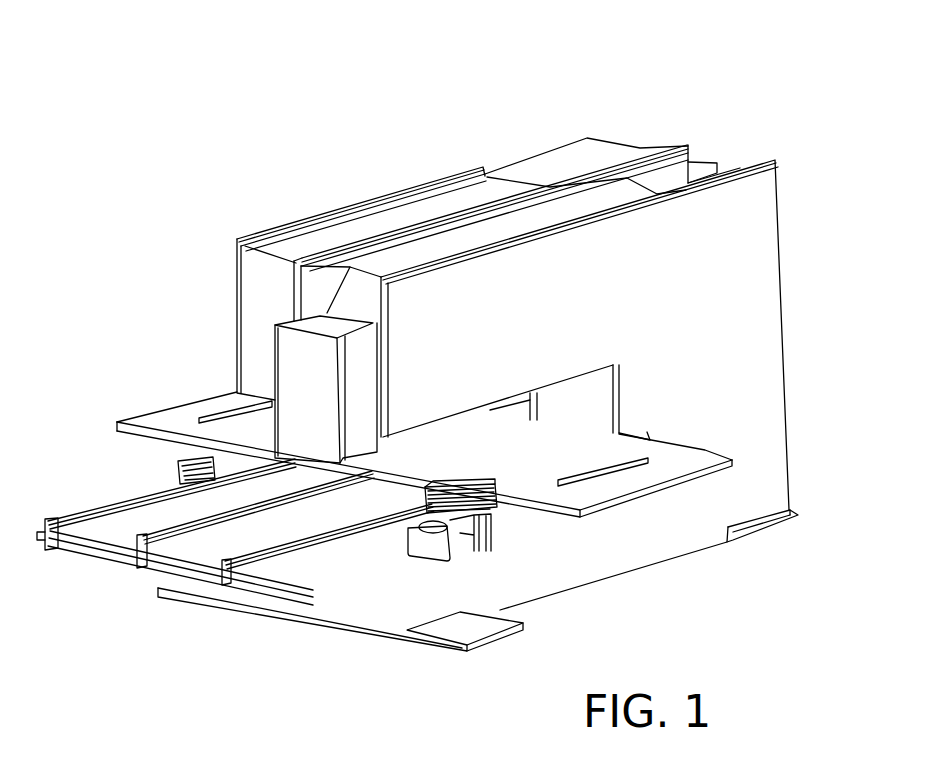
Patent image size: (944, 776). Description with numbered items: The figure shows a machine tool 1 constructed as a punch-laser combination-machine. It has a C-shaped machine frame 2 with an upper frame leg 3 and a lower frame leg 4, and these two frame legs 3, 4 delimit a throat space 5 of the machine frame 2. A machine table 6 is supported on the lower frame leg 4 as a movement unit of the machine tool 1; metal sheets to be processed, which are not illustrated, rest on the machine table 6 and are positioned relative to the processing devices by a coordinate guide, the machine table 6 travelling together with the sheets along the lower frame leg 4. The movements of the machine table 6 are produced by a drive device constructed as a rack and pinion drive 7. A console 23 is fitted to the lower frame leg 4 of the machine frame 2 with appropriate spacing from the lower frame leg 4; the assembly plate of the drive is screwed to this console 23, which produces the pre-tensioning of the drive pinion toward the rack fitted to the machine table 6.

The machine tool 1 is at (650, 107).
The machine frame 2 is at (792, 237).
The upper frame leg 3 is at (532, 324).
The lower frame leg 4 is at (647, 537).
The throat space 5 is at (595, 398).
The machine table 6 is at (705, 449).
The rack and pinion drive 7 is at (468, 582).
The console 23 is at (430, 540).